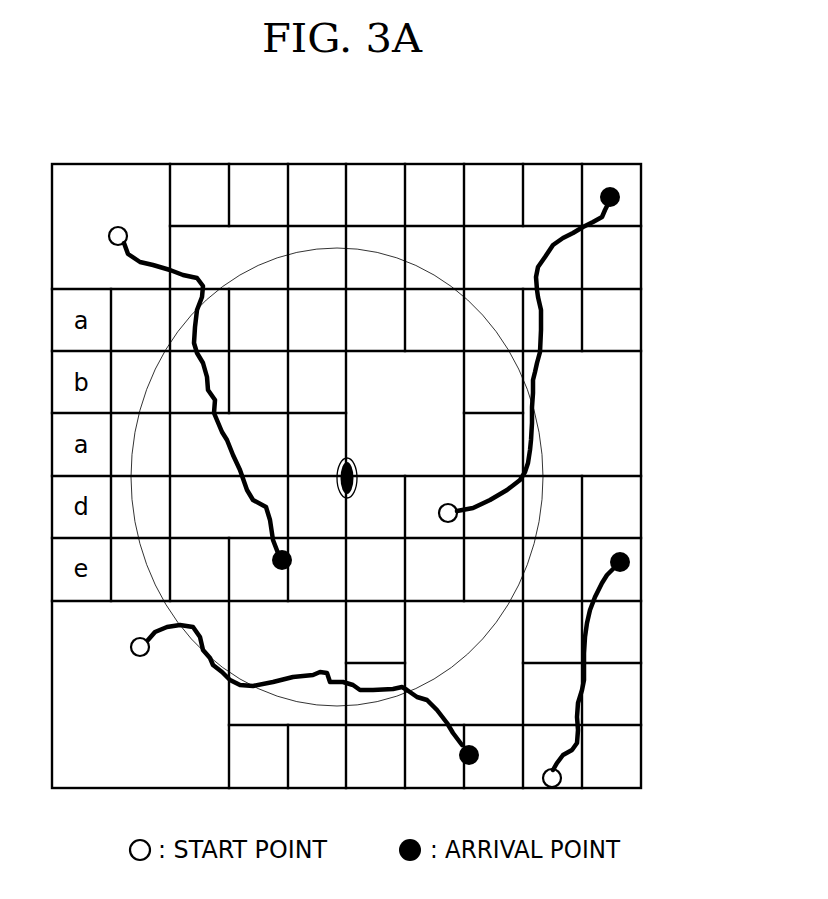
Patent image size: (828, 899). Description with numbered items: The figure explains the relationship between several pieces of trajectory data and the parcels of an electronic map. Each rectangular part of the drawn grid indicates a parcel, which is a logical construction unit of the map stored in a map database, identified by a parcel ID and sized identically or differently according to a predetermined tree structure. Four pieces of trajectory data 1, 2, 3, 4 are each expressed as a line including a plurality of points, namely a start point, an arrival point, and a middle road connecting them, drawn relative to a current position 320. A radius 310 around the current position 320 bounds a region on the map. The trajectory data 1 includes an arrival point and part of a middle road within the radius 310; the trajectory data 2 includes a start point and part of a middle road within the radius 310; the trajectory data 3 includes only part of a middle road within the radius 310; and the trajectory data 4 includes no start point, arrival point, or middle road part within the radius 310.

The radius 310 is at (373, 247).
The current position 320 is at (356, 466).
The trajectory data 1 is at (185, 379).
The trajectory data 2 is at (516, 354).
The trajectory data 3 is at (286, 695).
The trajectory data 4 is at (586, 644).